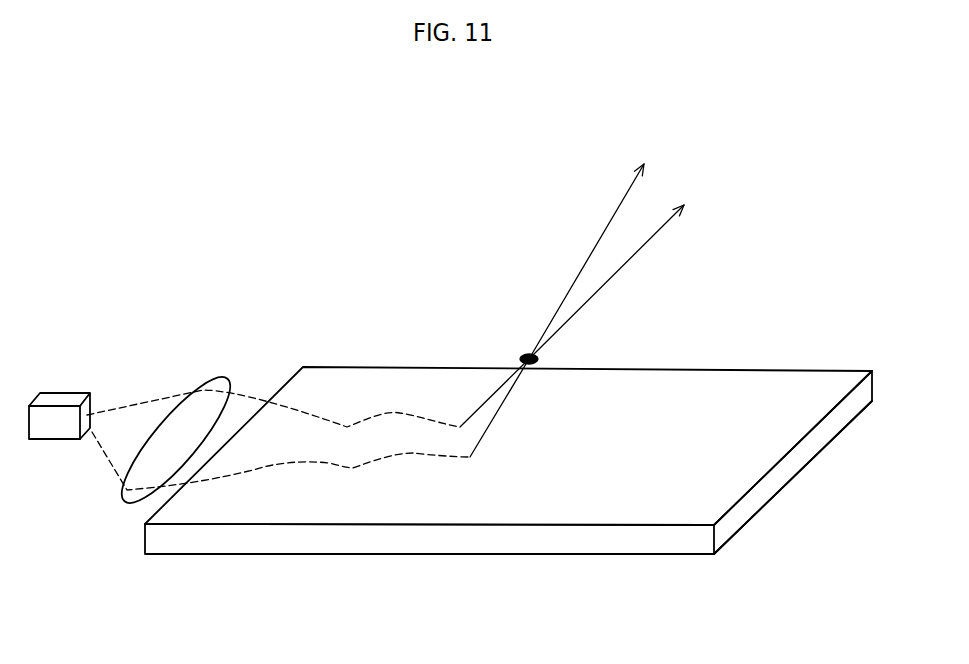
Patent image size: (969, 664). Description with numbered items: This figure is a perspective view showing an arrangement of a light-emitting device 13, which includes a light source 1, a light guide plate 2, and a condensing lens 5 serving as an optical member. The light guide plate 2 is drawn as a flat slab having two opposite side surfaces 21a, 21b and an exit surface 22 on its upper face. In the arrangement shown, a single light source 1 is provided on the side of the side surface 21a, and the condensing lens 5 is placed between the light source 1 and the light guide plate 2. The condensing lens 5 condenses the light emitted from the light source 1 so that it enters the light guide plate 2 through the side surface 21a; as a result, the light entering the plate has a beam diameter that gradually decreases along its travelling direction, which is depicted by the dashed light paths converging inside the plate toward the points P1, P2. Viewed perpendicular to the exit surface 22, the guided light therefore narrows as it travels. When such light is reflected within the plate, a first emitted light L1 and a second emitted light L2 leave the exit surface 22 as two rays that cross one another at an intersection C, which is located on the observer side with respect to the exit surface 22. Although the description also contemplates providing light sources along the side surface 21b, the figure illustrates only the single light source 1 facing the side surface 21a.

The light source 1 is at (58, 403).
The condensing lens 5 is at (216, 378).
The light guide plate 2 is at (713, 370).
The light-emitting device 13 is at (796, 253).
The exit surface 22 is at (760, 457).
The side surface 21a is at (145, 530).
The side surface 21b is at (768, 490).
The first incident point P1 is at (460, 427).
The second incident point P2 is at (470, 457).
The intersection C is at (525, 352).
The first emitted light L1 is at (642, 247).
The second emitted light L2 is at (603, 230).